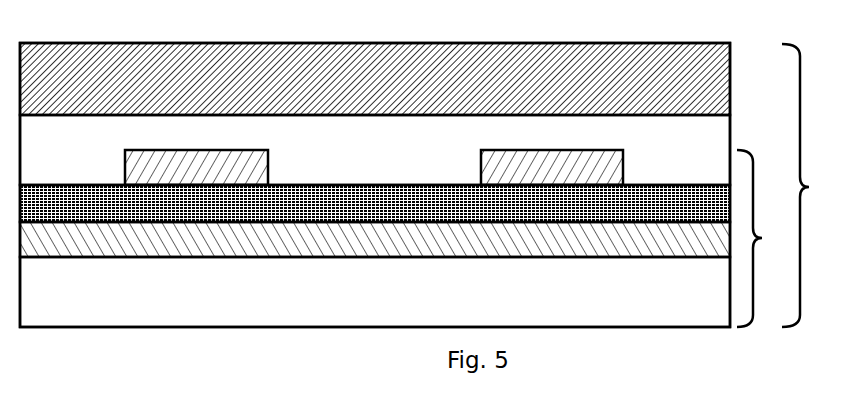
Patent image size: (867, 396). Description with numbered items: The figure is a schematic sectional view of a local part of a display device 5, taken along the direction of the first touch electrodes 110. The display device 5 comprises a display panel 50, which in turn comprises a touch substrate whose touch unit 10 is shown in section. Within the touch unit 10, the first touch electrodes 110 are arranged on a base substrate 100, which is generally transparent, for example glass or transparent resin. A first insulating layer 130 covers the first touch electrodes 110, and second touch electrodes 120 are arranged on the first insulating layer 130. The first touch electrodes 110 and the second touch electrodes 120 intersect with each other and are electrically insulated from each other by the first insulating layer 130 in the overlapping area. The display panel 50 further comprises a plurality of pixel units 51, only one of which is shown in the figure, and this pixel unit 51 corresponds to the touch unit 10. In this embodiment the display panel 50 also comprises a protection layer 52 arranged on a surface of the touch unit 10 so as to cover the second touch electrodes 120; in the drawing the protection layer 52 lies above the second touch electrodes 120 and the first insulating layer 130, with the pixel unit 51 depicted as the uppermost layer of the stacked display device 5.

The display device 5 is at (61, 33).
The touch unit 10 is at (767, 238).
The display panel 50 is at (812, 185).
The pixel unit 51 is at (375, 79).
The protection layer 52 is at (375, 150).
The base substrate 100 is at (375, 292).
The first touch electrodes 110 is at (375, 239).
The second touch electrodes 120 is at (374, 167).
The first insulating layer 130 is at (375, 203).